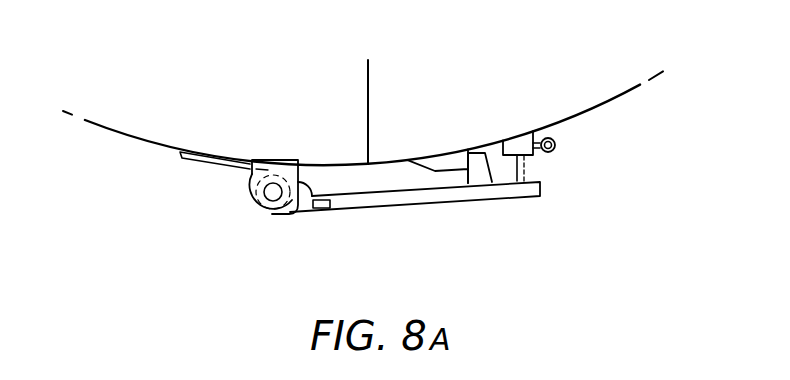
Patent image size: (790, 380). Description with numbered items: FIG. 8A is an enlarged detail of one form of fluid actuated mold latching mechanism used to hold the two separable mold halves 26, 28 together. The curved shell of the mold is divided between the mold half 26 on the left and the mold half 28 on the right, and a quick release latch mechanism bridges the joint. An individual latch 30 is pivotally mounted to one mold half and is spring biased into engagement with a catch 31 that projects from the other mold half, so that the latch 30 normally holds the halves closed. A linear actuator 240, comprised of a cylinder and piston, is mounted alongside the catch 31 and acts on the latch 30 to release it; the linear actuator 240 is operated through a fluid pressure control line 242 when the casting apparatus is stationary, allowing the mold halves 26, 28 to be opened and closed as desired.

The mold half 26 is at (241, 101).
The mold half 28 is at (464, 60).
The latch member 30 is at (380, 209).
The catch 31 is at (440, 161).
The linear actuator 240 is at (514, 143).
The fluid pressure control line 242 is at (557, 147).